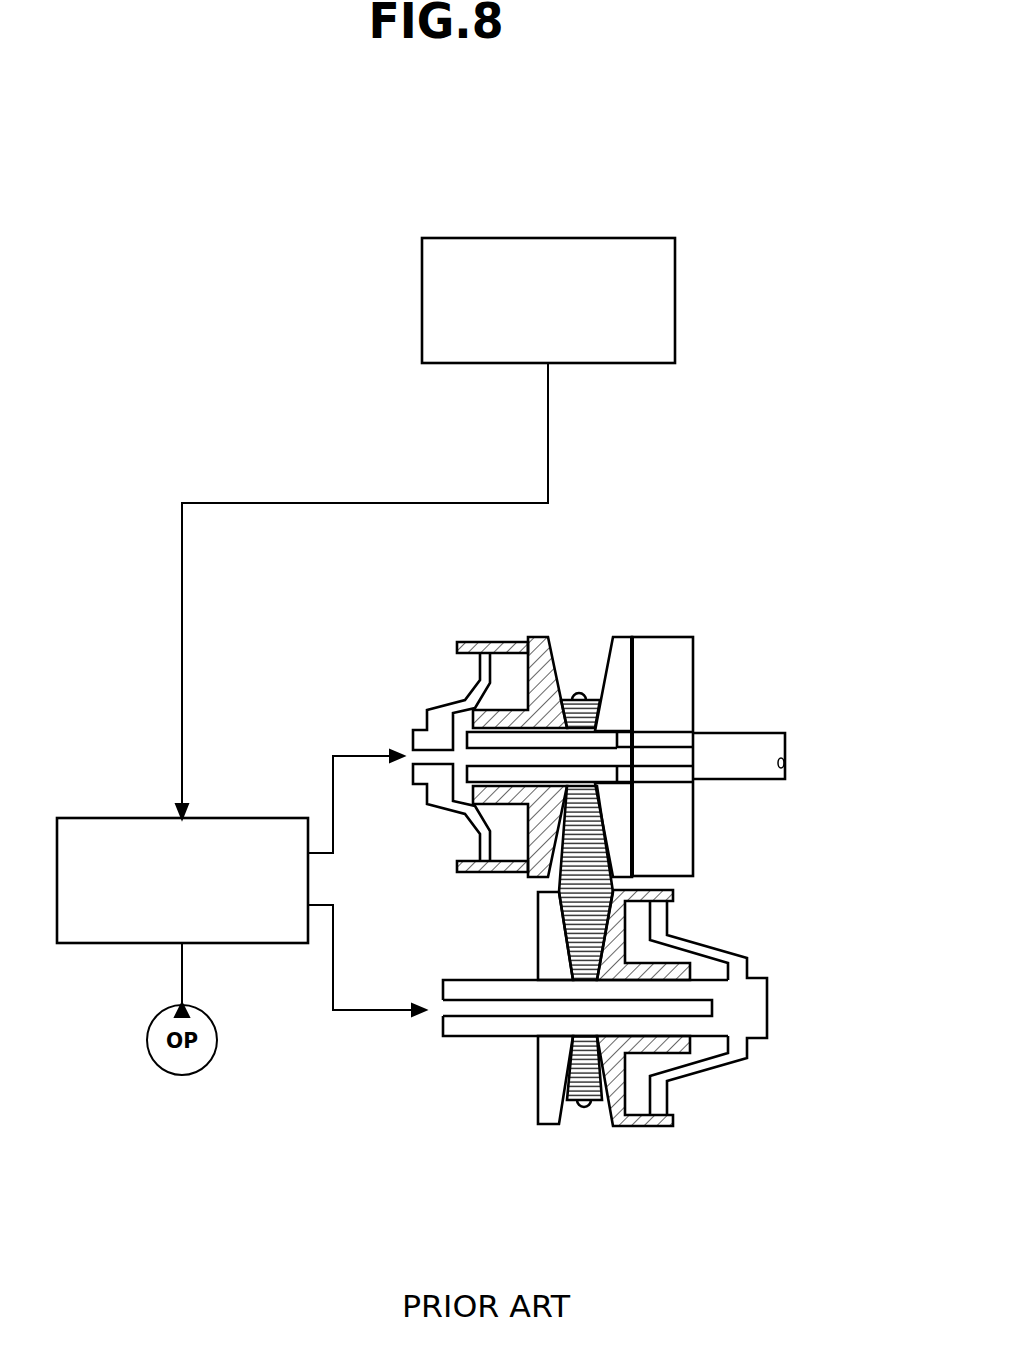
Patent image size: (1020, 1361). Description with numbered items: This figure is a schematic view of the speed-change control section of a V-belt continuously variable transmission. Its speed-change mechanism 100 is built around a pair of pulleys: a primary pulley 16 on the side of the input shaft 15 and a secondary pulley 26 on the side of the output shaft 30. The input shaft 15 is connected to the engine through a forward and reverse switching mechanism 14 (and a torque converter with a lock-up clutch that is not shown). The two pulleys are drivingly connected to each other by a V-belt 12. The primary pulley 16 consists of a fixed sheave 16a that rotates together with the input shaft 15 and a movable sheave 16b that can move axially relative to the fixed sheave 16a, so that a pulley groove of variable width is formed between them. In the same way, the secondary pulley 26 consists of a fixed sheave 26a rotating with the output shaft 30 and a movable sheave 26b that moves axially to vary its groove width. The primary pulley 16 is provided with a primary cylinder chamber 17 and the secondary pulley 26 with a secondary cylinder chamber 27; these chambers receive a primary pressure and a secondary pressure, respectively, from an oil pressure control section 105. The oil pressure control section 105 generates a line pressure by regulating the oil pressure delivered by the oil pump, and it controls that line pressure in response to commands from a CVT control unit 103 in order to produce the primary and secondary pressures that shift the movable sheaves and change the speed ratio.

The speed-change mechanism 100 is at (753, 1071).
The CVT control unit 103 is at (626, 238).
The oil pressure control section 105 is at (262, 943).
The V-belt 12 is at (600, 853).
The forward and reverse switching mechanism 14 is at (668, 637).
The input shaft 15 is at (740, 742).
The primary pulley 16 is at (413, 653).
The fixed sheave 16a is at (623, 637).
The movable sheave 16b is at (547, 637).
The primary cylinder chamber 17 is at (507, 680).
The secondary pulley 26 is at (490, 1091).
The fixed sheave 26a is at (537, 922).
The movable sheave 26b is at (617, 932).
The secondary cylinder chamber 27 is at (640, 1094).
The output shaft 30 is at (487, 1048).